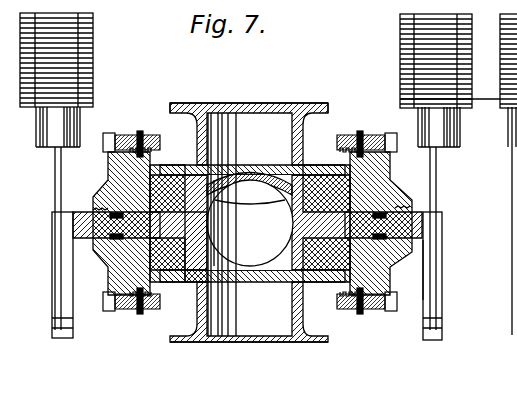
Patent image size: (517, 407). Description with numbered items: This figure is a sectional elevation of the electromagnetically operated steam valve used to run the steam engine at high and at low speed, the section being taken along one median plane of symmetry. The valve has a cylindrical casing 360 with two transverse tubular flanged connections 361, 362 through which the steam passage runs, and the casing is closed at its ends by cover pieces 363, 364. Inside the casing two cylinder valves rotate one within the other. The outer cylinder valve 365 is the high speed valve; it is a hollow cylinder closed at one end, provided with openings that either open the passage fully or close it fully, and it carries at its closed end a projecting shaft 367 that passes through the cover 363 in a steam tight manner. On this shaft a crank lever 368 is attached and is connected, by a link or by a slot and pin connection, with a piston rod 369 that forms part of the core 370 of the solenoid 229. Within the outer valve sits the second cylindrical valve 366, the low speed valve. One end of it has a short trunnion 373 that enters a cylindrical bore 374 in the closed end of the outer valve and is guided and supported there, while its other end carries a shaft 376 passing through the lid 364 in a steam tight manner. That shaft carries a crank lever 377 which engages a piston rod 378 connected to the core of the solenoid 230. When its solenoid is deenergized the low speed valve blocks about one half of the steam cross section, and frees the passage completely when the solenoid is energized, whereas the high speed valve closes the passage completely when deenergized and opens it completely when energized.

The solenoid 229 is at (84, 50).
The solenoid 230 is at (400, 45).
The cylindrical casing 360 is at (188, 300).
The transverse tubular flanged connection 361 is at (284, 113).
The transverse tubular flanged connection 362 is at (276, 343).
The cover piece 363 is at (108, 268).
The cover piece 364 is at (398, 292).
The outer cylinder valve 365 is at (298, 172).
The second cylindrical valve 366 is at (318, 278).
The projecting shaft 367 is at (92, 210).
The crank lever 368 is at (73, 318).
The piston rod 369 is at (55, 283).
The core 370 is at (38, 147).
The trunnion 373 is at (172, 272).
The cylindrical bore 374 is at (172, 200).
The shaft 376 is at (388, 258).
The crank lever 377 is at (423, 305).
The piston rod 378 is at (442, 296).